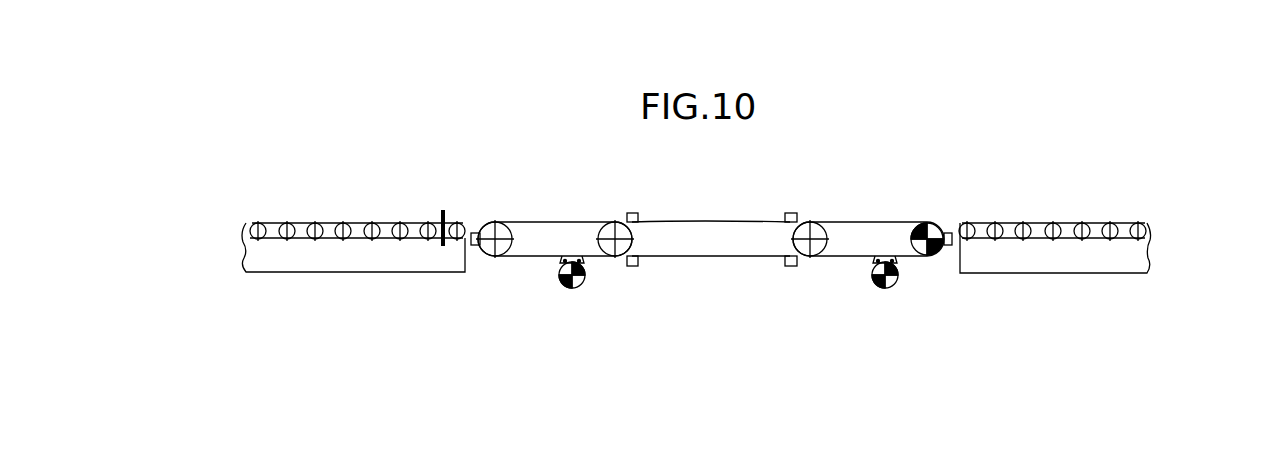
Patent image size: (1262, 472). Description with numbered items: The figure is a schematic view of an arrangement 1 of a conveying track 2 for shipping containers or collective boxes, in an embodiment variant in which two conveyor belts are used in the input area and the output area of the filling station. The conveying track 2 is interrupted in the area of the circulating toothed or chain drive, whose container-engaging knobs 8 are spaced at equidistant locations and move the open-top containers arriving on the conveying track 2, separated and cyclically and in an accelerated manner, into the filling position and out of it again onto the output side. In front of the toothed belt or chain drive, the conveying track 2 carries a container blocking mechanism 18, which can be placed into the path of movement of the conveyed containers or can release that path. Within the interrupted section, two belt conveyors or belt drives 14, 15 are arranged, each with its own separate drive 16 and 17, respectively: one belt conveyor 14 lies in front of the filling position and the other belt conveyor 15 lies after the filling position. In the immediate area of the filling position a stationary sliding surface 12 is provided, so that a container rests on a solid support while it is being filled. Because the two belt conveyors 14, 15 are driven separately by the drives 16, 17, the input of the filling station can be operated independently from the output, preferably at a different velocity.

The arrangement 1 is at (240, 122).
The conveying track 2 is at (272, 262).
The container-engaging knobs 8 is at (628, 215).
The stationary sliding surface 12 is at (722, 220).
The belt conveyor or belt drive 14 is at (535, 215).
The belt conveyor or belt drive 15 is at (892, 222).
The drive 16 is at (563, 284).
The drive 17 is at (892, 286).
The container blocking mechanism 18 is at (442, 210).